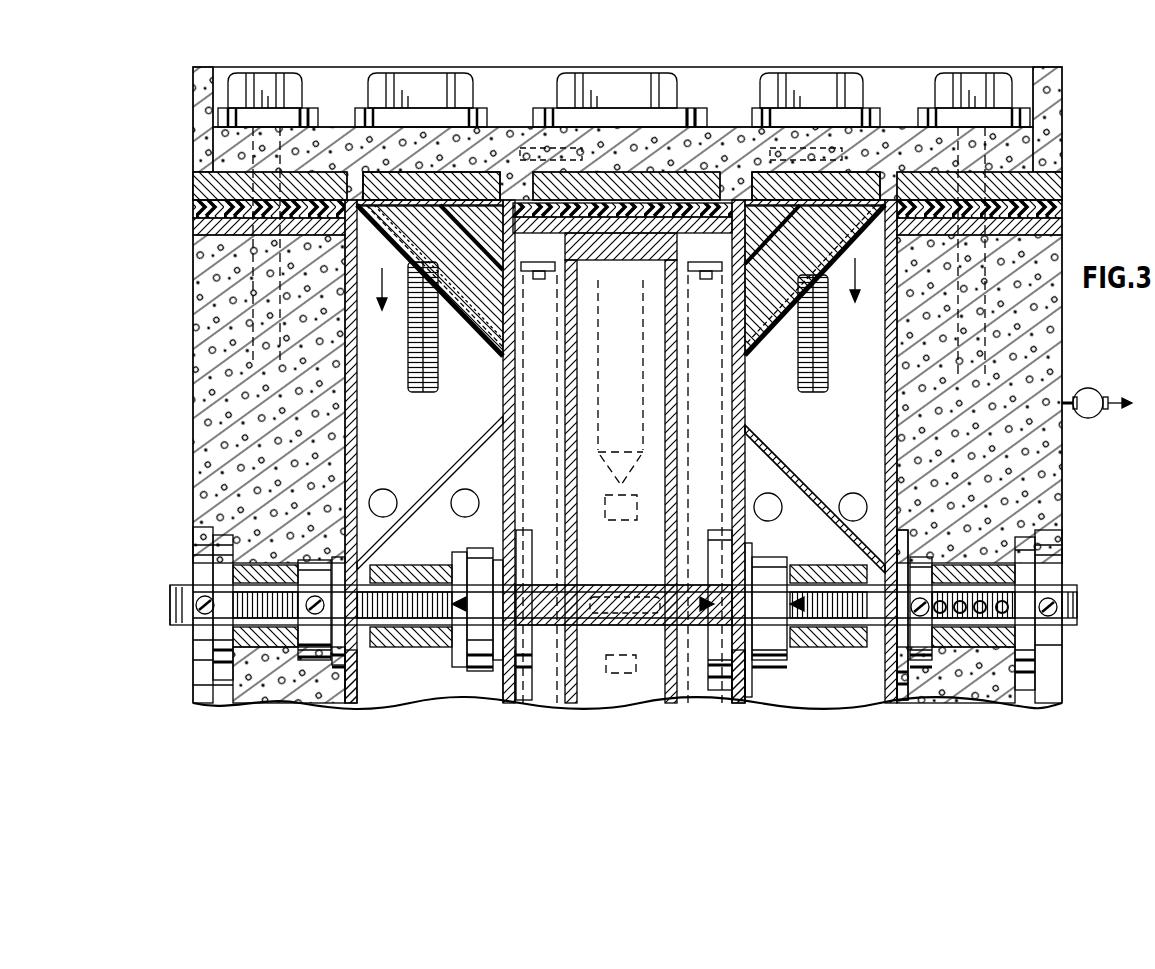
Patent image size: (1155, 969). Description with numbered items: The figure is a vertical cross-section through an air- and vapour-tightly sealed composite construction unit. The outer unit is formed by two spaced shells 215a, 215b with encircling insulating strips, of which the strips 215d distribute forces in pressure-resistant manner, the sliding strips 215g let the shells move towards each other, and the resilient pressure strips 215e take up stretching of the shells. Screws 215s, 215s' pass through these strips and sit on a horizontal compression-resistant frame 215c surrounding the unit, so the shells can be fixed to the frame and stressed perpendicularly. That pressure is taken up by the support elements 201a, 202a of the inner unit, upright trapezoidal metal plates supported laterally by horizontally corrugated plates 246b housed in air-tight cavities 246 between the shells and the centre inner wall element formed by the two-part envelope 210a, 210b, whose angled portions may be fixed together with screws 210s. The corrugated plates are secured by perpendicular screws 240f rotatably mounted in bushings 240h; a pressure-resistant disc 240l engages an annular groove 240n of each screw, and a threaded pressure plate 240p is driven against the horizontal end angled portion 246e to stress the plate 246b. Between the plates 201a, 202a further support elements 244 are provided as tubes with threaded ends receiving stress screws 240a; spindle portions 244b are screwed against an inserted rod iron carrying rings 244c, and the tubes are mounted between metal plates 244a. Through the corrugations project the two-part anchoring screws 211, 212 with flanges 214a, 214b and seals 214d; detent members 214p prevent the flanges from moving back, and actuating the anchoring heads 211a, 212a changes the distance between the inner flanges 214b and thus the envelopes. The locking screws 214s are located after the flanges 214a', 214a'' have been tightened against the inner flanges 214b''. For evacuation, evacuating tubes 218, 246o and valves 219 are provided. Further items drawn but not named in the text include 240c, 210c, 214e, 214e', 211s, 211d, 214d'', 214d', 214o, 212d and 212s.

The screw 215s' is at (251, 197).
The screw 215s is at (984, 204).
The perpendicular screw 240f is at (440, 92).
The stress screw 240a is at (620, 92).
The bolt collar 240c is at (688, 125).
The pressure-resistant disc 240l is at (345, 130).
The bushing 240h is at (490, 125).
The annular groove 240n is at (623, 163).
The pressure plate 240p is at (722, 158).
The horizontal compression-resistant frame 215c is at (1045, 128).
The insulating strip 215d is at (215, 185).
The sliding strip 215g is at (205, 210).
The pressure strip 215e is at (205, 228).
The outer shell 215a is at (196, 510).
The outer shell 215b is at (1050, 500).
The support element 201a is at (510, 412).
The support element 202a is at (725, 415).
The center tube wall 210c is at (545, 280).
The screw 210s is at (712, 280).
The metal plate 244a is at (570, 395).
The horizontal end angled portion 246e is at (472, 308).
The air-tight cavity 246 is at (404, 340).
The corrugated plate 246b is at (455, 452).
The spindle portion 244b is at (765, 440).
The evacuating tube 246o is at (465, 503).
The evacuating tube 218 is at (1080, 388).
The valve 219 is at (1100, 415).
The anchoring screw 211 is at (245, 610).
The support element 244 is at (592, 690).
The ring 244c is at (620, 690).
The guide rail 214e is at (636, 674).
The guide rail 214e' is at (621, 661).
The anchoring head 211a is at (205, 575).
The screw 211s is at (196, 606).
The bracket foot 211d is at (215, 690).
The collar 214d'' is at (343, 669).
The locking screw 214s is at (312, 615).
The flange 214a'' is at (334, 650).
The detent member 214p is at (375, 655).
The flange 214a is at (631, 663).
The seal 214d is at (627, 650).
The envelope part 210a is at (509, 680).
The inner flange 214b'' is at (646, 642).
The flange 214b is at (631, 649).
The envelope part 210b is at (738, 700).
The flange 214a' is at (952, 655).
The collar 214d' is at (925, 654).
The balls 214o is at (960, 600).
The anchoring screw 212 is at (1050, 580).
The bracket plate 212d is at (1040, 690).
The anchoring head 212a is at (1050, 598).
The screw 212s is at (1052, 616).